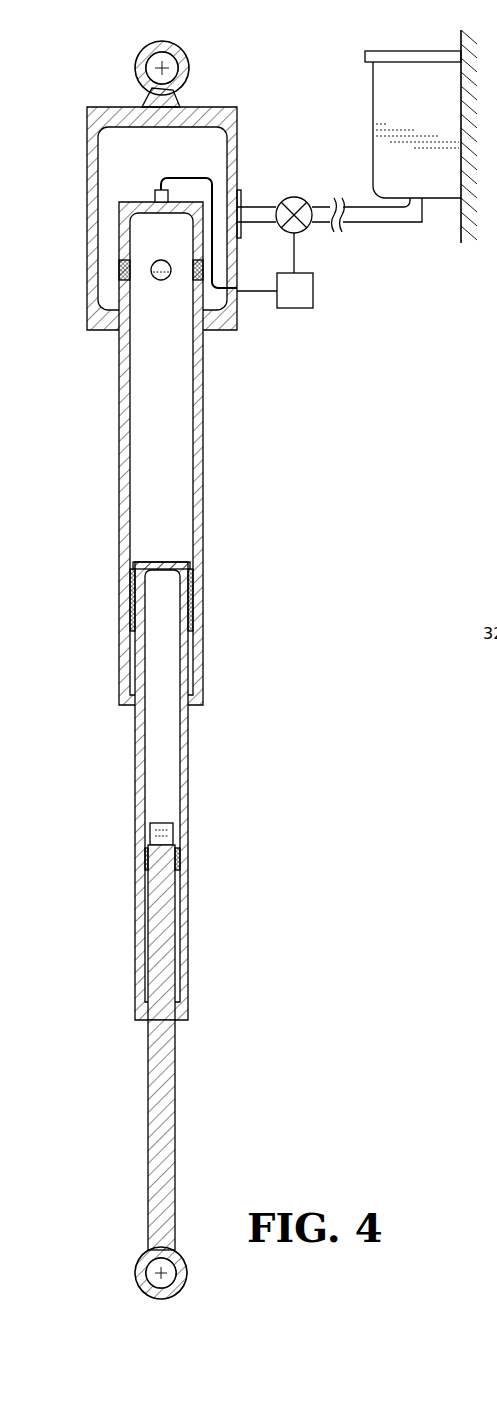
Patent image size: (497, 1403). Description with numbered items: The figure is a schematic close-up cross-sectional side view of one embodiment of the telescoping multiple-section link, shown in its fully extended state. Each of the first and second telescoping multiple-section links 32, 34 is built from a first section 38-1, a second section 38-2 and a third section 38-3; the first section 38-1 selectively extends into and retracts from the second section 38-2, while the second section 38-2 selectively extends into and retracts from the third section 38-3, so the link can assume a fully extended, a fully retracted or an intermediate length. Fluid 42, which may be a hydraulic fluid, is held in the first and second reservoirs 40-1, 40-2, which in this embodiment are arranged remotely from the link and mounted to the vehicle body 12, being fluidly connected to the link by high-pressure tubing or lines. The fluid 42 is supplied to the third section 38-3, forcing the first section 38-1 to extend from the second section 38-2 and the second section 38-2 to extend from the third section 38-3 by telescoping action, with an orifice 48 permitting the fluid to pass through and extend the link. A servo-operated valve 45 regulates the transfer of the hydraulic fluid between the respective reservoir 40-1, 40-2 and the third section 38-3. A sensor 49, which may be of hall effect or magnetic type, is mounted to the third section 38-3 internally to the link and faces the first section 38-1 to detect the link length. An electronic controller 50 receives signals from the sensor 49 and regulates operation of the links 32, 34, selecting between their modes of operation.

The vehicle body 12 is at (460, 42).
The fluid 42 is at (384, 109).
The first reservoir 40-1 is at (443, 190).
The second reservoir 40-2 is at (256, 214).
The servo-operated valve 45 is at (277, 203).
The electronic controller 50 is at (275, 270).
The second telescoping multiple-section link 34 is at (162, 209).
The first telescoping multiple-section link 32 is at (224, 492).
The sensor 49 is at (155, 196).
The orifice 48 is at (160, 281).
The third section 38-3 is at (200, 650).
The second section 38-2 is at (188, 940).
The first section 38-1 is at (170, 1147).